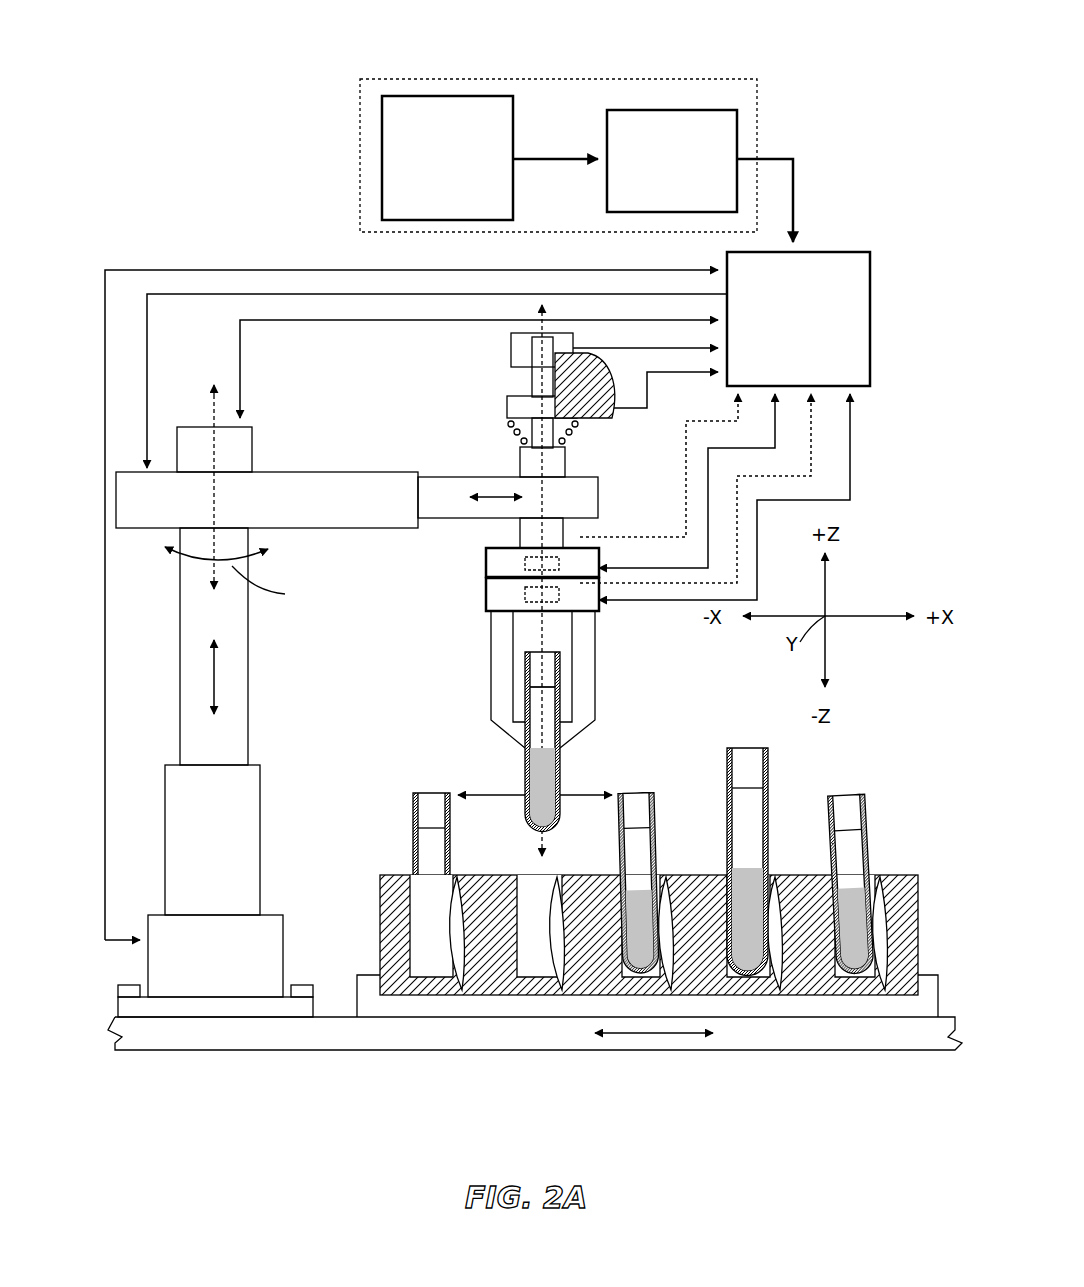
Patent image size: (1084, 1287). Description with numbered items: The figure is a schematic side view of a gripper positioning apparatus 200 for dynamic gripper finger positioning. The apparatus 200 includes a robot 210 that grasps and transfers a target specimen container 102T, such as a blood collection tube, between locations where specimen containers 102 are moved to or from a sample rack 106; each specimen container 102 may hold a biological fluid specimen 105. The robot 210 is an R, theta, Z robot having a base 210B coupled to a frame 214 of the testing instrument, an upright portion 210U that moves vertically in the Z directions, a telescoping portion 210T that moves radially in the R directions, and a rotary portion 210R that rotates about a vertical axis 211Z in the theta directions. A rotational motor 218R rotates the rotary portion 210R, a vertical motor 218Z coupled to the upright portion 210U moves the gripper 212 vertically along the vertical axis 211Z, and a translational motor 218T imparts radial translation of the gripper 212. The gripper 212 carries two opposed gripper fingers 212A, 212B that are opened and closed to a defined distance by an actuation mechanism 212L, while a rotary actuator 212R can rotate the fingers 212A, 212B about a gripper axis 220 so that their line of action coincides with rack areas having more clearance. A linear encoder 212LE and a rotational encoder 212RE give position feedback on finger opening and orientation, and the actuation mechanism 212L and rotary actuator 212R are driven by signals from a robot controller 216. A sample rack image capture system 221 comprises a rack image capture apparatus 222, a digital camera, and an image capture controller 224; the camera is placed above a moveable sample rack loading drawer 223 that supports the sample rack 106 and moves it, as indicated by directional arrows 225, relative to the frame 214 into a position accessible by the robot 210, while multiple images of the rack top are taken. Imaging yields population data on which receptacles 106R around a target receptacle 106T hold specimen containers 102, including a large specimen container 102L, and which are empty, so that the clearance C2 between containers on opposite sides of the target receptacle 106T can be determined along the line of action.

The gripper positioning apparatus 200 is at (322, 175).
The robot 210 is at (240, 246).
The sample rack image capture system 221 is at (608, 72).
The rack image capture apparatus 222 is at (513, 123).
The image capture controller 224 is at (737, 125).
The robot controller 216 is at (796, 250).
The vertical axis 211Z is at (212, 396).
The rotational motor 218R is at (252, 427).
The rotary portion 210R is at (318, 472).
The telescoping portion 210T is at (410, 530).
The translational motor 218T is at (131, 532).
The upright portion 210U is at (248, 694).
The vertical motor 218Z is at (148, 968).
The base 210B is at (118, 1004).
The frame 214 is at (325, 1050).
The moveable sample rack loading drawer 223 is at (850, 1017).
The directional arrows 225 is at (650, 1045).
The gripper axis 220 is at (530, 470).
The gripper 212 is at (533, 619).
The rotary actuator 212R is at (486, 562).
The actuation mechanism 212L is at (486, 597).
The rotational encoder 212RE is at (580, 544).
The linear encoder 212LE is at (532, 606).
The gripper finger 212A is at (491, 698).
The gripper finger 212B is at (595, 720).
The biological fluid specimen 105 is at (533, 717).
The specimen container 102 is at (560, 697).
The target specimen container 102T is at (652, 797).
The large specimen container 102L is at (737, 748).
The sample rack 106 is at (627, 899).
The receptacles 106R is at (470, 895).
The target receptacle 106T is at (562, 897).
The clearance C2 is at (535, 799).